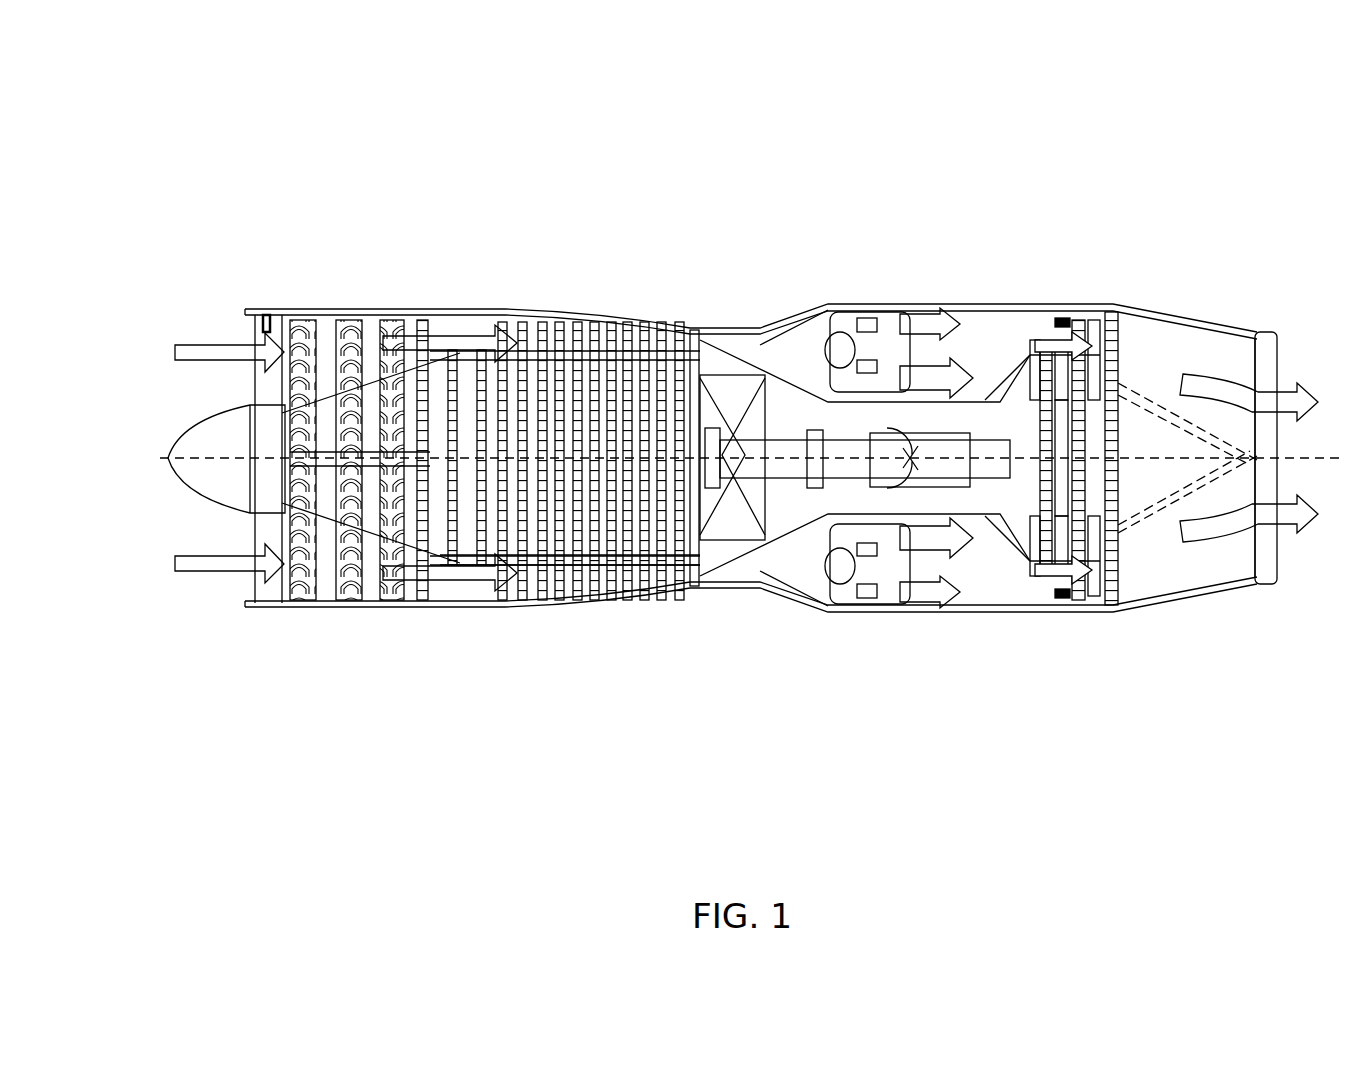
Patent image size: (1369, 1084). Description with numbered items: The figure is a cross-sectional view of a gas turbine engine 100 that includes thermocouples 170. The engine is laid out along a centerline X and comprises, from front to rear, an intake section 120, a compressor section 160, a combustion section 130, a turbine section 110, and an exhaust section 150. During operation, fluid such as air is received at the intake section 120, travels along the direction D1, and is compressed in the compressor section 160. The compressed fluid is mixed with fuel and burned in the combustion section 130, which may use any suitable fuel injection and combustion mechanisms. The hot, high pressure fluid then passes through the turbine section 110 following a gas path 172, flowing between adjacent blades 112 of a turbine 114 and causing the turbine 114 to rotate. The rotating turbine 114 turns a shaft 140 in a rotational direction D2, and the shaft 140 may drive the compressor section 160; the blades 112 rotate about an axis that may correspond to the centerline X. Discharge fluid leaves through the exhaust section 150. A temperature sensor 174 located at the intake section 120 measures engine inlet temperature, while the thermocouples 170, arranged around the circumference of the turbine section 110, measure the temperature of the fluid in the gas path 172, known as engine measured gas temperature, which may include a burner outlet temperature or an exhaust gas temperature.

The gas turbine engine 100 is at (800, 680).
The turbine section 110 is at (1078, 305).
The blades 112 is at (1113, 435).
The turbine 114 is at (1140, 470).
The intake section 120 is at (238, 591).
The combustion section 130 is at (982, 330).
The shaft 140 is at (945, 462).
The exhaust section 150 is at (1268, 371).
The compressor section 160 is at (537, 318).
The thermocouples 170 is at (1052, 350).
The gas path 172 is at (1063, 320).
The temperature sensor 174 is at (261, 318).
The direction D1 is at (190, 362).
The rotational direction D2 is at (903, 447).
The centerline X is at (1360, 459).